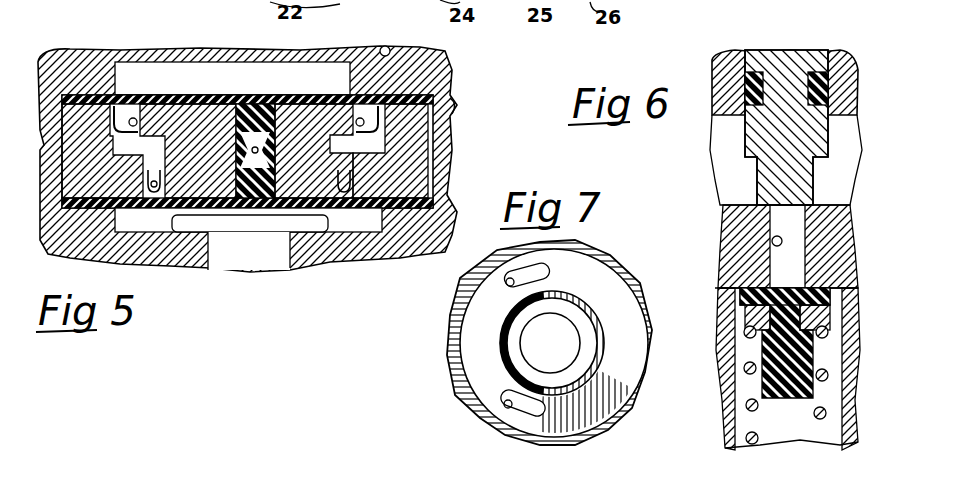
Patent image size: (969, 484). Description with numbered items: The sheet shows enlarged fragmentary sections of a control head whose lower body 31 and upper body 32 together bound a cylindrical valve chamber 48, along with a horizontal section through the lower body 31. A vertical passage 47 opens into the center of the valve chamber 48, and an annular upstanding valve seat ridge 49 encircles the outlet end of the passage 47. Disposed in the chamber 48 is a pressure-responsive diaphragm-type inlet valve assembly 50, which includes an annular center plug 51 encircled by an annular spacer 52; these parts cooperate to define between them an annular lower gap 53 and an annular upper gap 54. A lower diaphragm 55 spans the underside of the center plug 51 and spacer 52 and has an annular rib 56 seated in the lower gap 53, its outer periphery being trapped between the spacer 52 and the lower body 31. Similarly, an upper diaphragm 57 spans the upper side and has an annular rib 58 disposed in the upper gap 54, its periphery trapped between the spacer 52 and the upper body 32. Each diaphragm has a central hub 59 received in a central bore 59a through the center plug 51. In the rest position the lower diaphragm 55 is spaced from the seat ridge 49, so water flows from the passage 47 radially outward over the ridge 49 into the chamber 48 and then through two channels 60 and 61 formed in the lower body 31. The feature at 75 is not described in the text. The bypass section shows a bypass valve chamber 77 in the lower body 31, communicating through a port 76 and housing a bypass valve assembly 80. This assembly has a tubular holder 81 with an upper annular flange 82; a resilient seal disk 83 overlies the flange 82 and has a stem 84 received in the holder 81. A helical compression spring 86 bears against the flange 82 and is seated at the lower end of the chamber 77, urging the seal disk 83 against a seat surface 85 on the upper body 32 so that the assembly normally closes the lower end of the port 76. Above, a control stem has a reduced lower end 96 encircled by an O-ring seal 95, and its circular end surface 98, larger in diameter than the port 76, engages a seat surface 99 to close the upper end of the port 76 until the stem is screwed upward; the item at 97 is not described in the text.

In FIG. 5, the lower body 31 is at (452, 201).
In FIG. 5, the upper body 32 is at (455, 112).
In FIG. 5, the vertical passage 47 is at (210, 262).
In FIG. 7, the vertical passage 47 is at (524, 345).
In FIG. 5, the cylindrical valve chamber 48 is at (133, 216).
In FIG. 7, the cylindrical valve chamber 48 is at (618, 305).
In FIG. 5, the valve seat ridge 49 is at (332, 222).
In FIG. 7, the valve seat ridge 49 is at (596, 300).
In FIG. 5, the inlet valve assembly 50 is at (177, 90).
In FIG. 5, the center plug 51 is at (166, 112).
In FIG. 5, the annular spacer 52 is at (76, 193).
In FIG. 5, the lower gap 53 is at (150, 160).
In FIG. 5, the upper gap 54 is at (120, 130).
In FIG. 5, the lower diaphragm 55 is at (85, 220).
In FIG. 5, the annular rib 56 is at (355, 167).
In FIG. 5, the upper diaphragm 57 is at (207, 96).
In FIG. 5, the annular rib 58 is at (383, 140).
In FIG. 5, the central hub 59 is at (242, 106).
In FIG. 5, the central bore 59a is at (282, 130).
In FIG. 7, the channel 60 is at (507, 282).
In FIG. 7, the channel 61 is at (505, 405).
In FIG. 5, the passage 75 is at (384, 47).
In FIG. 6, the port 76 is at (775, 241).
In FIG. 6, the bypass valve chamber 77 is at (742, 390).
In FIG. 6, the bypass valve assembly 80 is at (740, 425).
In FIG. 6, the tubular holder 81 is at (752, 350).
In FIG. 6, the annular flange 82 is at (748, 316).
In FIG. 6, the seal disk 83 is at (812, 273).
In FIG. 6, the stem 84 is at (805, 355).
In FIG. 6, the seat surface 85 is at (742, 300).
In FIG. 6, the helical compression spring 86 is at (828, 413).
In FIG. 6, the O-ring seal 95 is at (750, 85).
In FIG. 6, the reduced lower end 96 is at (787, 60).
In FIG. 6, the seal ring 97 is at (818, 56).
In FIG. 6, the circular end surface 98 is at (810, 220).
In FIG. 6, the seat surface 99 is at (728, 200).